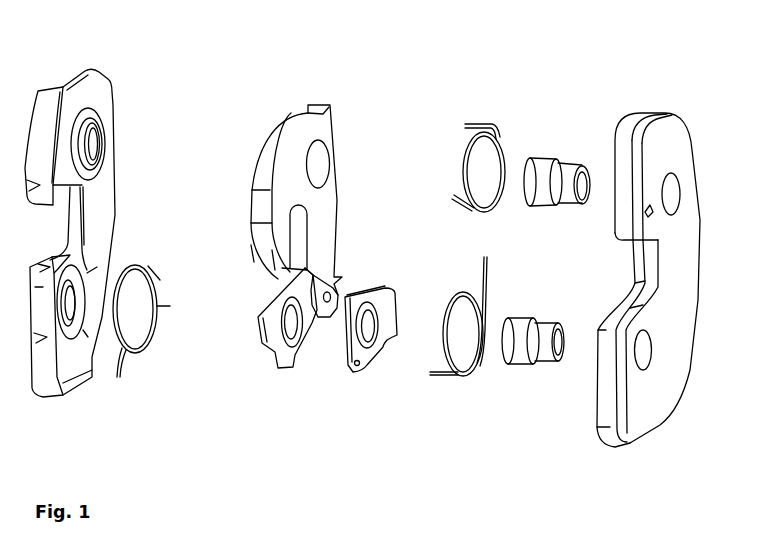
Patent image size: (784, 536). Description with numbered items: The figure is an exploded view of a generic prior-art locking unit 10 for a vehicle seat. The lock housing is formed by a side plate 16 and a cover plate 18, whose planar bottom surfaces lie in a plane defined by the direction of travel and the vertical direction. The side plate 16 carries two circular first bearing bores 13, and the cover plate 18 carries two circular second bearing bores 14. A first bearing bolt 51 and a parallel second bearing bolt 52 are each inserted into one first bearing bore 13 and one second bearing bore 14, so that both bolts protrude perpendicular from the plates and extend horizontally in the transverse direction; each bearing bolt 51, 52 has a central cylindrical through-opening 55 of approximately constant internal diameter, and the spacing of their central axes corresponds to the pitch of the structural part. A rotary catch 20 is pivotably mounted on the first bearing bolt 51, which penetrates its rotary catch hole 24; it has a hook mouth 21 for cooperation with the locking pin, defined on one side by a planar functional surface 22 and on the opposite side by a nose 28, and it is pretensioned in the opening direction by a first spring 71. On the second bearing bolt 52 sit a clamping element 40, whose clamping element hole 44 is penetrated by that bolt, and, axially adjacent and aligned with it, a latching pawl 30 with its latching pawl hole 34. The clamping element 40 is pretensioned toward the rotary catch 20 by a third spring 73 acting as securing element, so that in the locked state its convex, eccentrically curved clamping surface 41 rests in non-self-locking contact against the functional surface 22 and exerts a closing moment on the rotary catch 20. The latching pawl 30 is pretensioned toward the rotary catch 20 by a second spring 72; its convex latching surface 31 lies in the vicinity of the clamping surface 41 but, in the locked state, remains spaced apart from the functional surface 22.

The locking unit 10 is at (477, 80).
The first bearing bores 13 is at (98, 145).
The second bearing bores 14 is at (672, 190).
The side plate 16 is at (88, 93).
The cover plate 18 is at (668, 256).
The rotary catch 20 is at (303, 185).
The hook mouth 21 is at (297, 237).
The functional surface 22 is at (305, 256).
The rotary catch hole 24 is at (320, 165).
The nose 28 is at (266, 267).
The latching pawl 30 is at (298, 347).
The latching surface 31 is at (309, 298).
The latching pawl hole 34 is at (293, 323).
The clamping element 40 is at (389, 333).
The clamping surface 41 is at (398, 312).
The clamping element hole 44 is at (367, 323).
The first bearing bolt 51 is at (564, 230).
The second bearing bolt 52 is at (520, 333).
The through-opening 55 is at (582, 183).
The first spring 71 is at (472, 163).
The second spring 72 is at (147, 345).
The third spring 73 is at (477, 363).